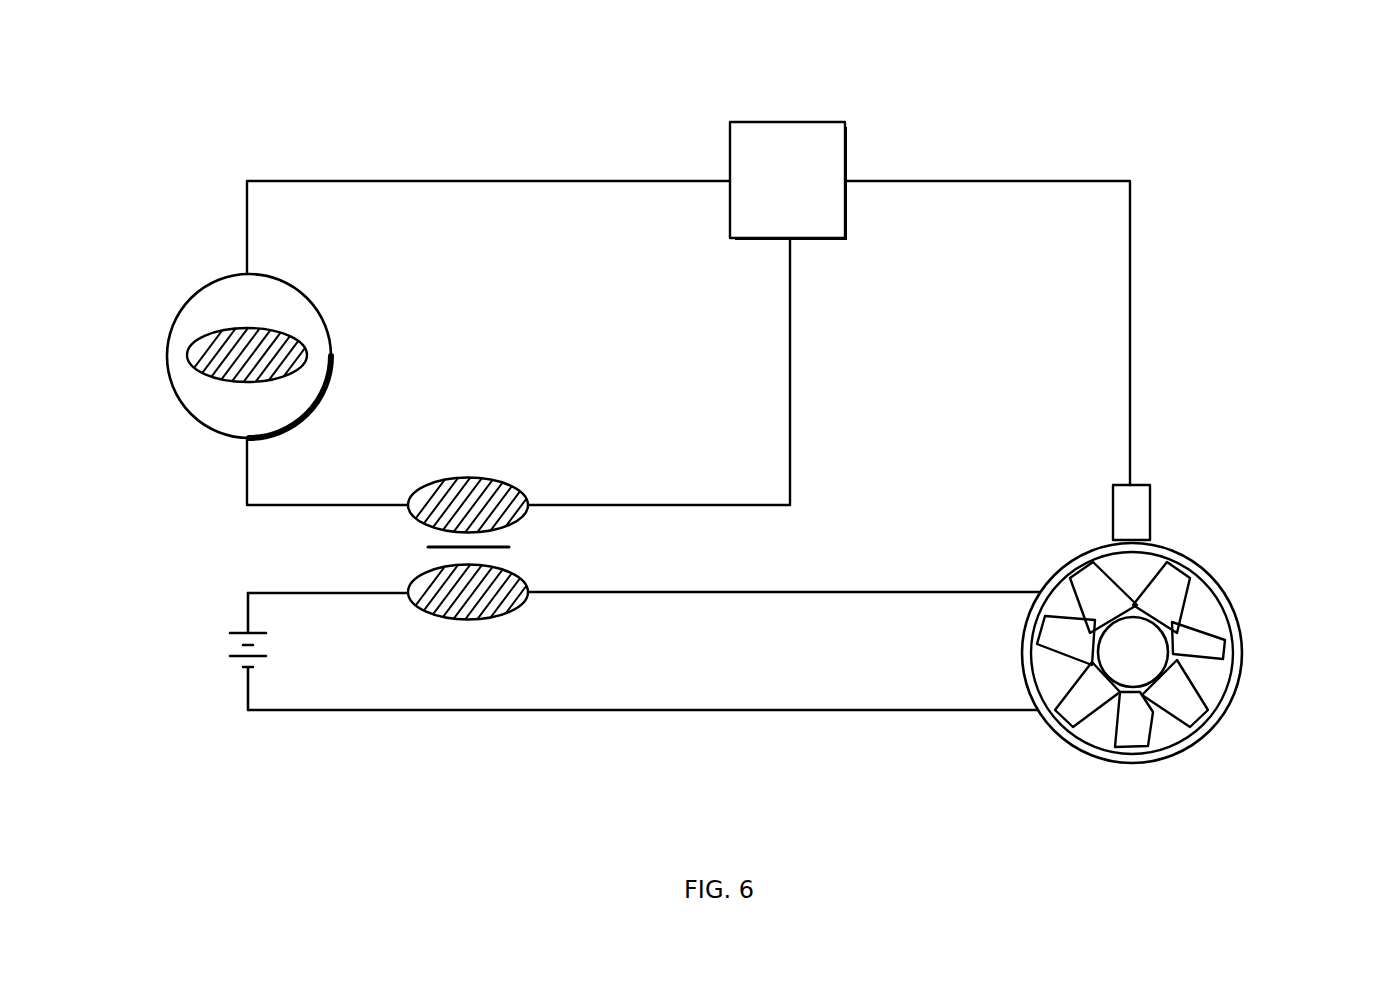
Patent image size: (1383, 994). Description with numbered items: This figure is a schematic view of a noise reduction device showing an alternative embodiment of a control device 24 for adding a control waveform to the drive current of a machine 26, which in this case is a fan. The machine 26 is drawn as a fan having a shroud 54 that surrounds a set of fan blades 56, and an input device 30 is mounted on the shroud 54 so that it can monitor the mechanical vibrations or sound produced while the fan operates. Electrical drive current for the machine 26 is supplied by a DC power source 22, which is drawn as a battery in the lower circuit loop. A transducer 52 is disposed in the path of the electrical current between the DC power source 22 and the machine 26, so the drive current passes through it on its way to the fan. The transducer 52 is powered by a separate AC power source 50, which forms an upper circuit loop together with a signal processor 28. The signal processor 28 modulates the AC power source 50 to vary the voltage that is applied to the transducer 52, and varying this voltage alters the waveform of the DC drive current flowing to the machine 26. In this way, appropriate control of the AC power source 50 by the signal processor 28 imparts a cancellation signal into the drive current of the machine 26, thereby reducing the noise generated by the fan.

The DC power source 22 is at (243, 632).
The control device 24 is at (240, 98).
The machine 26 is at (1248, 518).
The signal processor 28 is at (788, 181).
The input device 30 is at (1151, 503).
The AC power source 50 is at (209, 283).
The transducer 52 is at (487, 478).
The shroud 54 is at (1218, 581).
The fan blades 56 is at (1226, 648).